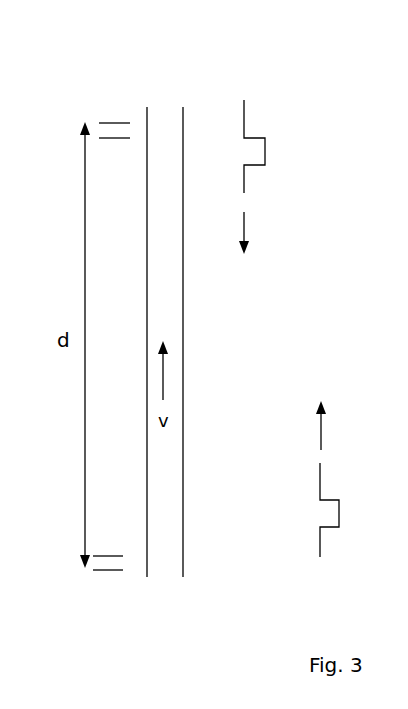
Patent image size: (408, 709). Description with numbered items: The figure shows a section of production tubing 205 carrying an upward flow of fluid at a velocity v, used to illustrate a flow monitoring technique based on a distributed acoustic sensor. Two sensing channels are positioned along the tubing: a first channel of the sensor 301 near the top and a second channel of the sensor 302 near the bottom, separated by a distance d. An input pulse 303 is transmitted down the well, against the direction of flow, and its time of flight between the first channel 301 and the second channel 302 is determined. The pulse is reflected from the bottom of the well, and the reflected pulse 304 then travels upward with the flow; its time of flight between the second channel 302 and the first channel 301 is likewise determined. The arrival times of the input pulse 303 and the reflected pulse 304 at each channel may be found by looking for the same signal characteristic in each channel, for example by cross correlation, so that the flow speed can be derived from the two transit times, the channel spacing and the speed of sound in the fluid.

The production tubing 205 is at (184, 138).
The first channel of the sensor 301 is at (118, 122).
The second channel of the sensor 302 is at (100, 570).
The input pulse 303 is at (267, 177).
The reflected pulse 304 is at (343, 479).